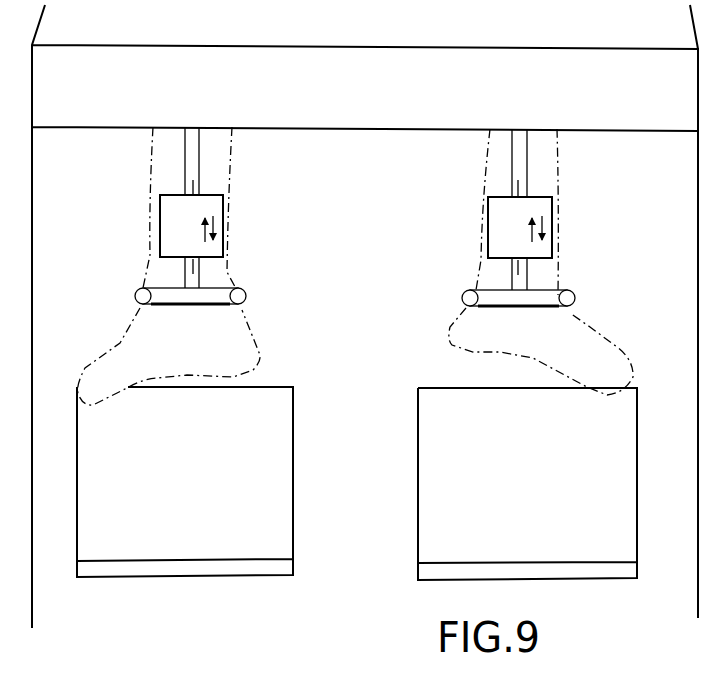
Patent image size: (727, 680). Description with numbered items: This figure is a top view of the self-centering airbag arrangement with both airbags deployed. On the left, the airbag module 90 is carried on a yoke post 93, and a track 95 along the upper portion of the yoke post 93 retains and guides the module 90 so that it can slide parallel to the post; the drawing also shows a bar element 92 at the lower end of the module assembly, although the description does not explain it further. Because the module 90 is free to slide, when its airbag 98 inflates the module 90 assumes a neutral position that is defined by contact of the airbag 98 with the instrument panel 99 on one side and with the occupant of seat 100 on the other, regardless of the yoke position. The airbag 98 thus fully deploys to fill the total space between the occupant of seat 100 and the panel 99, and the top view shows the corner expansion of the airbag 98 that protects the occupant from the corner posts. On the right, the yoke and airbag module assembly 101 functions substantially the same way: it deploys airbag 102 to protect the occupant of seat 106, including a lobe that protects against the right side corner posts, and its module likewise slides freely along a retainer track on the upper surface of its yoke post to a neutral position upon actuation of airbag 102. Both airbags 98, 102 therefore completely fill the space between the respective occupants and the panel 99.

The airbag module 90 is at (170, 205).
The roller bar 92 is at (247, 290).
The yoke post 93 is at (192, 162).
The track 95 is at (194, 185).
The airbag 98 is at (138, 350).
The instrument panel 99 is at (435, 113).
The seat 100 is at (260, 398).
The right side yoke and airbag module assembly 101 is at (466, 259).
The airbag 102 is at (467, 328).
The seat 106 is at (467, 453).